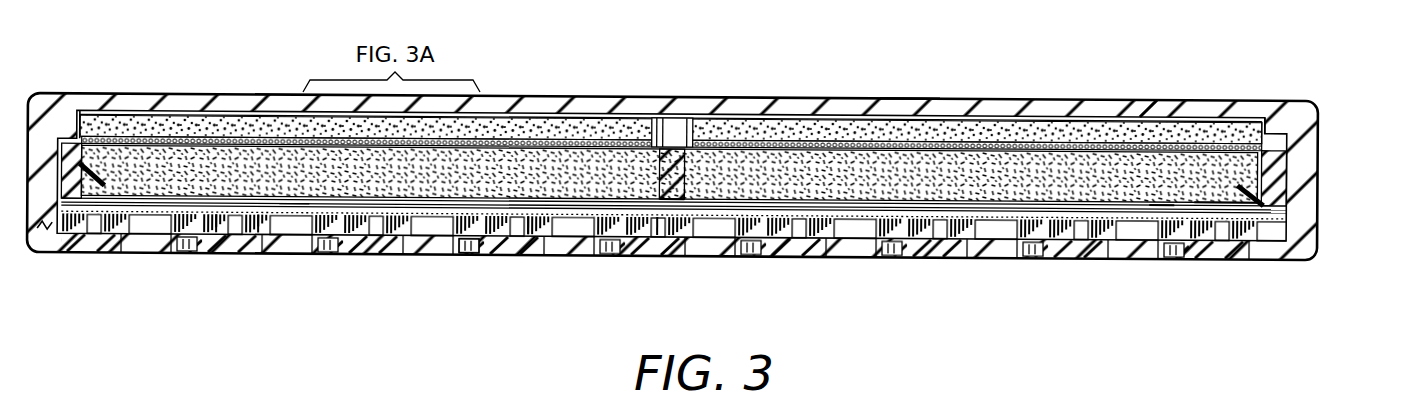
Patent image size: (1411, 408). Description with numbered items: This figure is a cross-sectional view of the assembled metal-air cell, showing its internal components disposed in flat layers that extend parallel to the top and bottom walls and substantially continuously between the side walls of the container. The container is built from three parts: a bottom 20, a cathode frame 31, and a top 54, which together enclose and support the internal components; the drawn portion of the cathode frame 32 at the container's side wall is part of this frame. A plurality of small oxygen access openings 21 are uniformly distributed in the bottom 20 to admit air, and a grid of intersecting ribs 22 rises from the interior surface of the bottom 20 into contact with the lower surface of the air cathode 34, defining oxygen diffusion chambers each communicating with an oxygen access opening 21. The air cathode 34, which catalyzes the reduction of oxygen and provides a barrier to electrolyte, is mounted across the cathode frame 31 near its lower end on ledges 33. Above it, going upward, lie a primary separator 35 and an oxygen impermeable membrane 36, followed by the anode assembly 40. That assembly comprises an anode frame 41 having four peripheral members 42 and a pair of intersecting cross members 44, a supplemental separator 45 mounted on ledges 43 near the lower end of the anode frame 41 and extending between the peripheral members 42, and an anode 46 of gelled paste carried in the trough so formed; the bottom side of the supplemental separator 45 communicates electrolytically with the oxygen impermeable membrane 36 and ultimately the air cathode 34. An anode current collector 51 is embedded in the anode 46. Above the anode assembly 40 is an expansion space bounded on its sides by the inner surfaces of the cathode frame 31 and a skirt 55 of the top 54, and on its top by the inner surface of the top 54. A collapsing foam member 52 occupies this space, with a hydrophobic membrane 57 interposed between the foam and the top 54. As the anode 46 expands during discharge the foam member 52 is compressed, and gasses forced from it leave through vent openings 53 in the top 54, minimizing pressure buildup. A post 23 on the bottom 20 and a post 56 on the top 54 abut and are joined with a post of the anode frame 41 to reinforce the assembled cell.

The bottom 20 is at (413, 257).
The oxygen access openings 21 is at (469, 249).
The ribs 22 is at (533, 238).
The post 23 is at (662, 233).
The cathode frame 31 is at (52, 216).
The housing seal member 32 is at (57, 132).
The ledges 33 is at (79, 228).
The air cathode 34 is at (220, 217).
The primary separator 35 is at (258, 217).
The oxygen impermeable membrane 36 is at (293, 204).
The anode assembly 40 is at (1279, 128).
The anode frame 41 is at (1275, 194).
The peripheral members 42 is at (1273, 174).
The ledges 43 is at (1265, 217).
The cross members 44 is at (688, 197).
The supplemental separator 45 is at (1203, 199).
The anode 46 is at (1161, 195).
The anode current collector 51 is at (1181, 147).
The foam member 52 is at (1218, 131).
The vent openings 53 is at (910, 96).
The top 54 is at (1151, 104).
The skirt 55 is at (1321, 107).
The post 56 is at (677, 124).
The hydrophobic membrane 57 is at (1060, 120).